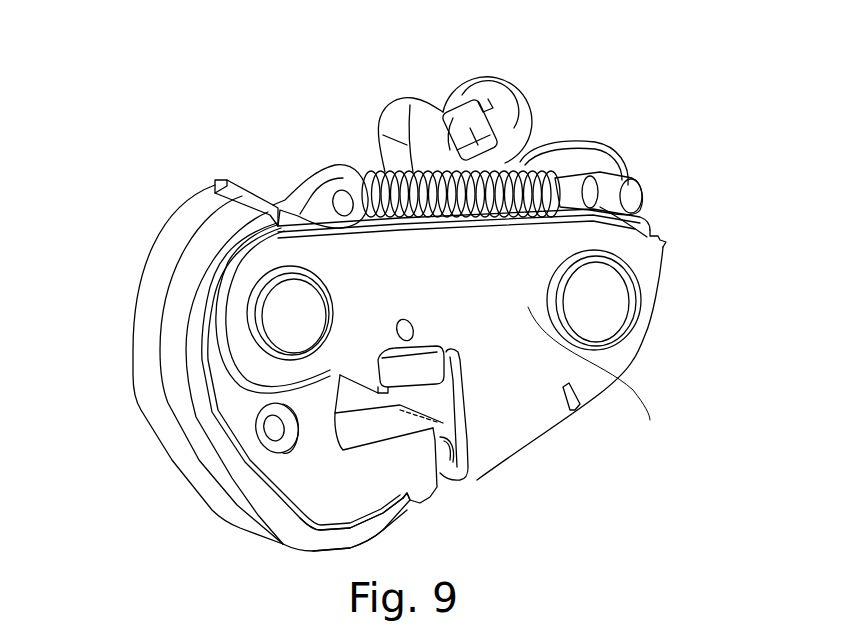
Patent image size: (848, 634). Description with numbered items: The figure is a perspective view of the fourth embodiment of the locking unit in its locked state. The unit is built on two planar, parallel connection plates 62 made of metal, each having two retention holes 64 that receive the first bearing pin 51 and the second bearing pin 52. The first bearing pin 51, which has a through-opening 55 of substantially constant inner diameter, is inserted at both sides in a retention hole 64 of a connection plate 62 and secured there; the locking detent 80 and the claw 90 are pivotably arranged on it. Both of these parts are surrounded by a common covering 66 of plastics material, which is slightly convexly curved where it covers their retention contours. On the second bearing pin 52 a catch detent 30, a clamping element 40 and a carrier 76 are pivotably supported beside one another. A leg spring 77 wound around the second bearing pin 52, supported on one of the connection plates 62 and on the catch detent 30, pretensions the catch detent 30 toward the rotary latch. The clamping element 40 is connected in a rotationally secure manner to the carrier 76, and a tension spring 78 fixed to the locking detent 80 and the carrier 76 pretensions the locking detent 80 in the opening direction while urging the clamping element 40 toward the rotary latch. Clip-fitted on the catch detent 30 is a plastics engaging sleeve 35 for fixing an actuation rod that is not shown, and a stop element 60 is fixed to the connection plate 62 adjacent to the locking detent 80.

The catch detent 30 is at (465, 72).
The engaging sleeve 35 is at (460, 120).
The clamping element 40 is at (523, 158).
The first bearing pin 51 is at (285, 308).
The second bearing pin 52 is at (612, 343).
The through-opening 55 is at (287, 317).
The stop element 60 is at (433, 367).
The connection plates 62 is at (596, 374).
The retention holes 64 is at (297, 343).
The covering 66 is at (347, 507).
The carrier 76 is at (595, 163).
The leg spring 77 is at (577, 412).
The tension spring 78 is at (384, 173).
The locking detent 80 is at (183, 410).
The claw 90 is at (140, 378).